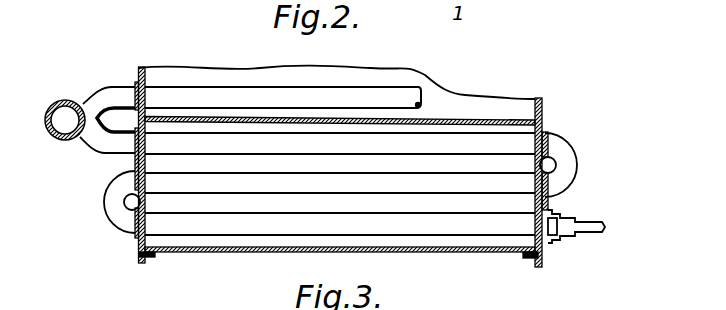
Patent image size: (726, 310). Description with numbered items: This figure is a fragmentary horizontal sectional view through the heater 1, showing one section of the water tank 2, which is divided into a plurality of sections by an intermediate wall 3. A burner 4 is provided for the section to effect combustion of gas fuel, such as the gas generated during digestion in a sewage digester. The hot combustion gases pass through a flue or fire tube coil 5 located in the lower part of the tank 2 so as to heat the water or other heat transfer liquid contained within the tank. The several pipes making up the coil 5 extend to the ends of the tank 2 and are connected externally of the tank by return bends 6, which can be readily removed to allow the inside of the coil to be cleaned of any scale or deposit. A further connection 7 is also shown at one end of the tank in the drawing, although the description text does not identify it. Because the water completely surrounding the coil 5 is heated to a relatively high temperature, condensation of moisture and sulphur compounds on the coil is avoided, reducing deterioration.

The heater 1 is at (470, 255).
The water tank 2 is at (235, 253).
The intermediate wall 3 is at (490, 119).
The burner 4 is at (562, 250).
The fire tube coil 5 is at (190, 226).
The return bend 6 is at (108, 205).
The inlet pipe 7 is at (58, 122).